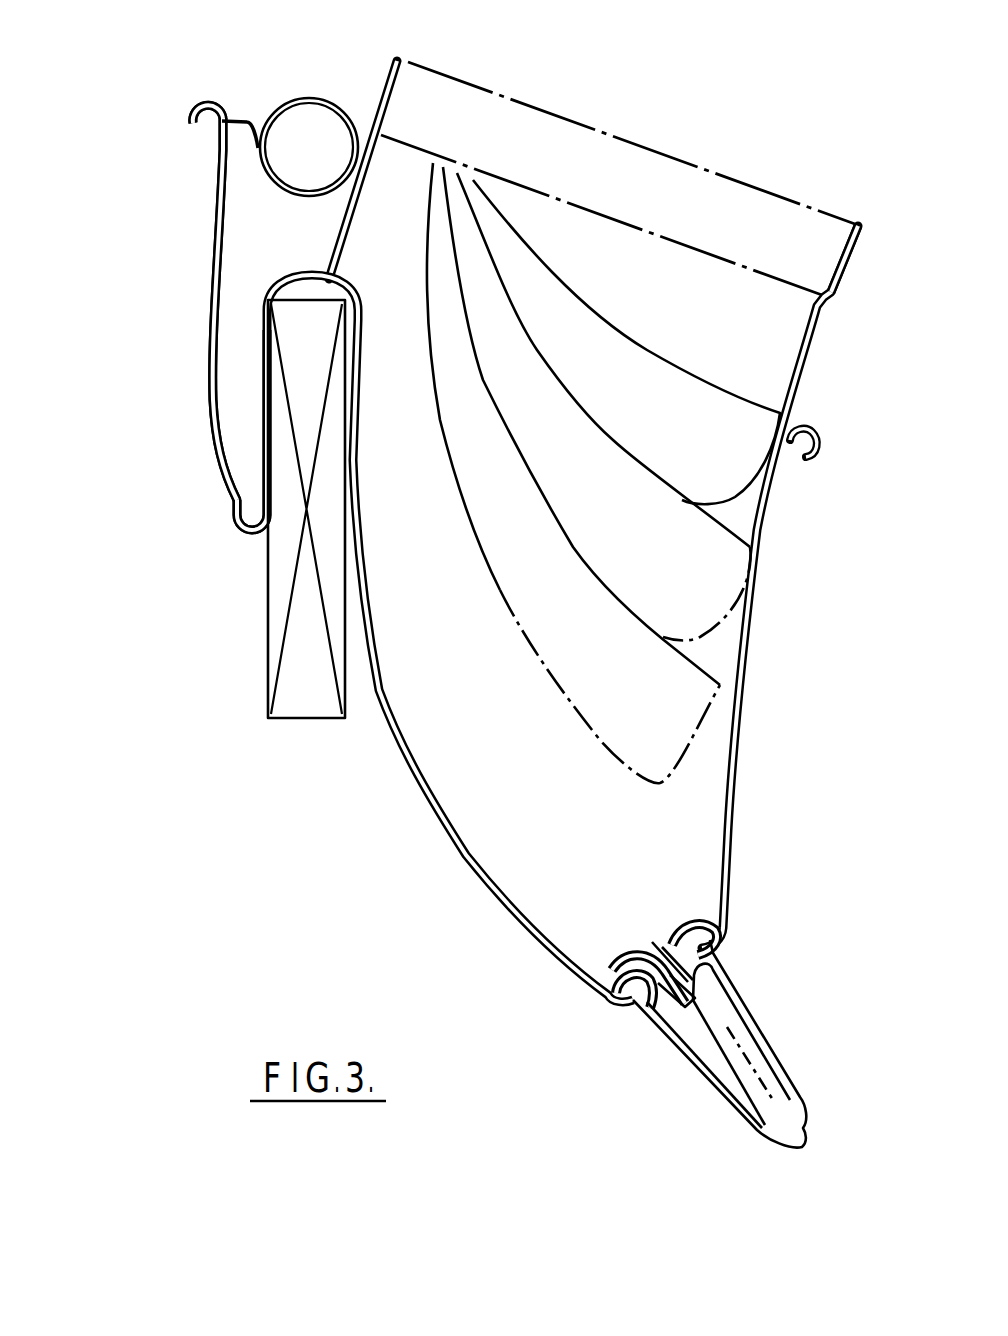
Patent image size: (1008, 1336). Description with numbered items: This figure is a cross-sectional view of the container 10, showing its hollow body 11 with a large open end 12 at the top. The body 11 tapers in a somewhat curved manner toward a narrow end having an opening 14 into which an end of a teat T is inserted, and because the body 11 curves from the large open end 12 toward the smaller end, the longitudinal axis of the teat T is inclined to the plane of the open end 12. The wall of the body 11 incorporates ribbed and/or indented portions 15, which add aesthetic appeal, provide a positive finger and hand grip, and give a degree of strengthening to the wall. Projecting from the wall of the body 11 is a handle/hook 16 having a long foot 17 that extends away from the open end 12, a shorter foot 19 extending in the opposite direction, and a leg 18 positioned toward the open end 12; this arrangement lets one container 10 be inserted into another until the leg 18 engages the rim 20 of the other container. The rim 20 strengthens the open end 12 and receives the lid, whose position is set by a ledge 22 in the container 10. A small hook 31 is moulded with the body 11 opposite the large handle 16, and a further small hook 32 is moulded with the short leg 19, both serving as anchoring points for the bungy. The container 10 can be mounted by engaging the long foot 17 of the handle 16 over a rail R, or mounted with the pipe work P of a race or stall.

The container 10 is at (430, 872).
The hollow body 11 is at (703, 848).
The large open end 12 is at (690, 190).
The opening 14 is at (630, 995).
The ribbed and/or indented portions 15 is at (673, 710).
The handle/hook 16 is at (185, 330).
The long foot 17 is at (227, 415).
The leg 18 is at (323, 237).
The shorter foot 19 is at (240, 153).
The rim 20 is at (572, 113).
The ledge 22 is at (772, 267).
The small hook 31 is at (820, 443).
The further small hook 32 is at (203, 100).
The pipe P is at (313, 100).
The rail R is at (245, 625).
The teat T is at (730, 1144).